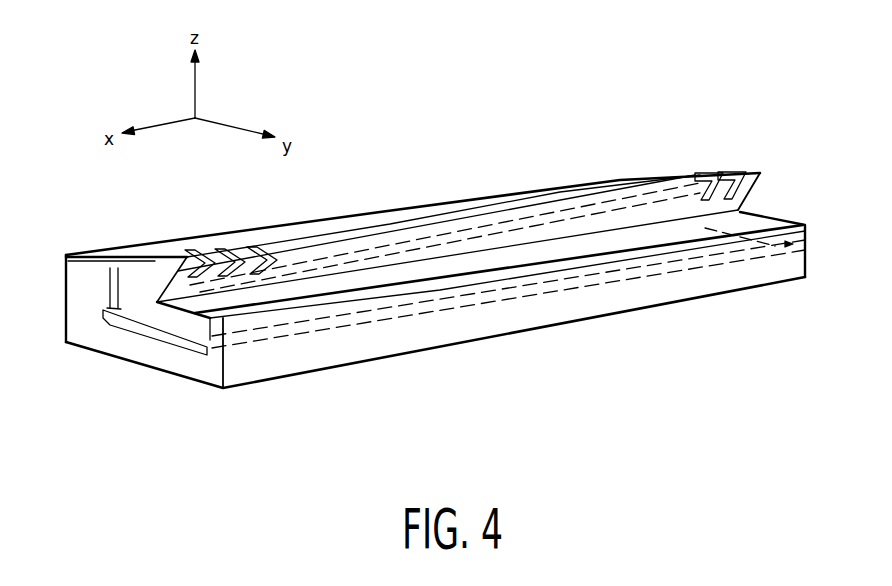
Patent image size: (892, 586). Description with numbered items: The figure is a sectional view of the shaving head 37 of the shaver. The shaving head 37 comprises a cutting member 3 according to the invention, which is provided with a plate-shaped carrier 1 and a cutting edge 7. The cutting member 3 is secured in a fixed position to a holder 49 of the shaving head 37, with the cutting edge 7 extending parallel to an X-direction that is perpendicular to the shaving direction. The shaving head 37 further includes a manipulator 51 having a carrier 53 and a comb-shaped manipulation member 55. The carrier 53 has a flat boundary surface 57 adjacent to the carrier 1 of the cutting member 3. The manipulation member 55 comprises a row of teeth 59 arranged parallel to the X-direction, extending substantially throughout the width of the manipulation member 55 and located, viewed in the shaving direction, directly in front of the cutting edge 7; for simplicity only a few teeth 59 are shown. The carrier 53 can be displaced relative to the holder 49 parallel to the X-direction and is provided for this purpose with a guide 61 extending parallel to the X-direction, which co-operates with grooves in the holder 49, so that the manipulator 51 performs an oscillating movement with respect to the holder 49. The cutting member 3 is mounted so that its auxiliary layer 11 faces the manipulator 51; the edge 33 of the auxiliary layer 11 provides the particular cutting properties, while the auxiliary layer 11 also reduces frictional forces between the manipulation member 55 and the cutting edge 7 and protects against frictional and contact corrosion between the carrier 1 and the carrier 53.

The plate-shaped carrier 1 is at (560, 190).
The cutting member 3 is at (396, 154).
The cutting edge 7 is at (445, 219).
The edge of the auxiliary layer 33 is at (467, 208).
The auxiliary layer 11 is at (122, 258).
The shaving head 37 is at (106, 425).
The holder 49 is at (97, 323).
The manipulator 51 is at (784, 181).
The carrier 53 is at (153, 287).
The comb-shaped manipulation member 55 is at (334, 240).
The flat boundary surface 57 is at (138, 265).
The teeth 59 is at (255, 250).
The guide 61 is at (195, 332).